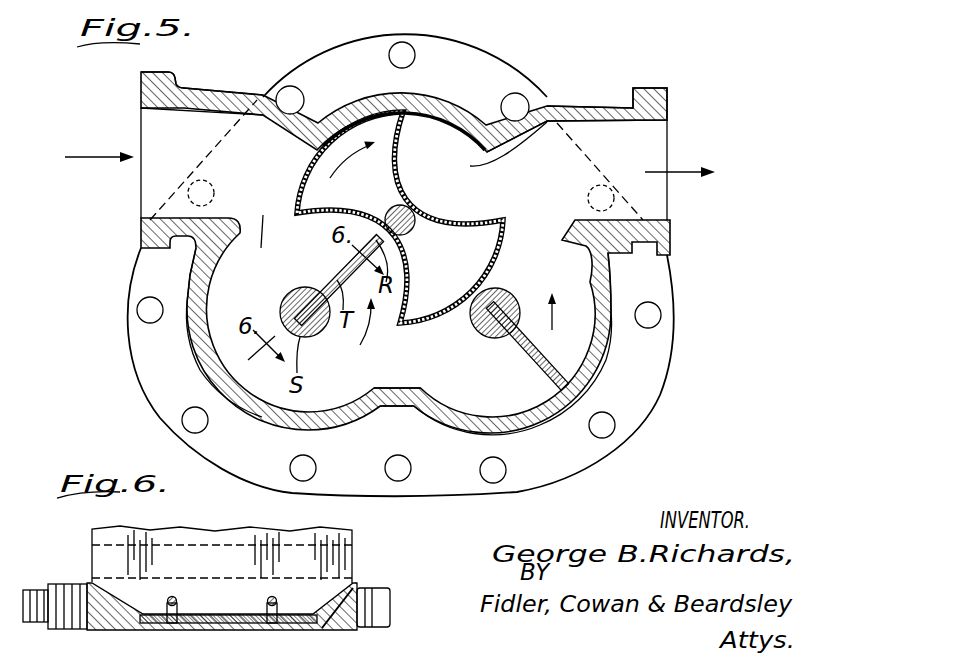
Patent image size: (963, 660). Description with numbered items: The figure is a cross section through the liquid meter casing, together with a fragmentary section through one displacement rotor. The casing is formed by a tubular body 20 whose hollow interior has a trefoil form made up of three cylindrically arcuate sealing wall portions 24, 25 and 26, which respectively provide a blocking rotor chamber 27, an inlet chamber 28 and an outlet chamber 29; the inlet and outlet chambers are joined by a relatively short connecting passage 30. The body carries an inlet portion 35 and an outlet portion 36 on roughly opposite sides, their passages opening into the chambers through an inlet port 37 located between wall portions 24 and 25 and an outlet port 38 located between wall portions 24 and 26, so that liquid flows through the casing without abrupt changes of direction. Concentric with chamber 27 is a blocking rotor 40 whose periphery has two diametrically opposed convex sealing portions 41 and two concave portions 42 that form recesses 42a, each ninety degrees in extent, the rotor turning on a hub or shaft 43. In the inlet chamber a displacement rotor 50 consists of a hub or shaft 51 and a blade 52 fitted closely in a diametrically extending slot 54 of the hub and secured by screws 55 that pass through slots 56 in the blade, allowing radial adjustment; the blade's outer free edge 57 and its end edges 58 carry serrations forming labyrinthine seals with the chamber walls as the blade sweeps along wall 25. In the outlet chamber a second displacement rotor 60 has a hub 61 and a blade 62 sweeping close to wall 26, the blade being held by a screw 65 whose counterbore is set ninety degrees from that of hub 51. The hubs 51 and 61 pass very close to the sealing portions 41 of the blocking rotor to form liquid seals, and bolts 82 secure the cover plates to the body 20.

In FIG. 5, the tubular body 20 is at (333, 423).
In FIG. 5, the cylindrically arcuate sealing wall portion 24 is at (443, 101).
In FIG. 5, the cylindrically arcuate sealing wall portion 25 is at (220, 347).
In FIG. 5, the cylindrically arcuate sealing wall portion 26 is at (600, 348).
In FIG. 5, the blocking rotor cavity 27 is at (548, 106).
In FIG. 5, the inlet cavity 28 is at (247, 370).
In FIG. 5, the outlet cavity 29 is at (497, 403).
In FIG. 5, the connecting passage 30 is at (407, 367).
In FIG. 5, the inlet portion 35 is at (205, 97).
In FIG. 5, the outlet portion 36 is at (613, 107).
In FIG. 5, the inlet port 37 is at (208, 273).
In FIG. 5, the outlet port 38 is at (593, 272).
In FIG. 5, the blocking rotor 40 is at (366, 113).
In FIG. 5, the convex cylindrically arcuate sealing portion 41 is at (360, 116).
In FIG. 5, the concave arcuate portion 42 is at (455, 222).
In FIG. 5, the recess 42a is at (430, 104).
In FIG. 5, the hub or shaft 43 is at (410, 232).
In FIG. 5, the displacement rotor 50 is at (318, 335).
In FIG. 6, the displacement rotor 50 is at (403, 589).
In FIG. 5, the hub or shaft 51 is at (280, 310).
In FIG. 6, the hub or shaft 51 is at (352, 596).
In FIG. 5, the blade 52 is at (336, 278).
In FIG. 6, the blade 52 is at (350, 537).
In FIG. 6, the diametrically extending slot 54 is at (325, 633).
In FIG. 5, the screw 55 is at (290, 292).
In FIG. 6, the screw 55 is at (267, 603).
In FIG. 6, the slot 56 is at (270, 596).
In FIG. 5, the outer free edge 57 is at (388, 225).
In FIG. 6, the end edge 58 is at (92, 546).
In FIG. 5, the displacement rotor 60 is at (490, 345).
In FIG. 5, the hub 61 is at (472, 308).
In FIG. 5, the blade 62 is at (530, 354).
In FIG. 5, the screw 65 is at (507, 298).
In FIG. 5, the bolt 82 is at (300, 463).